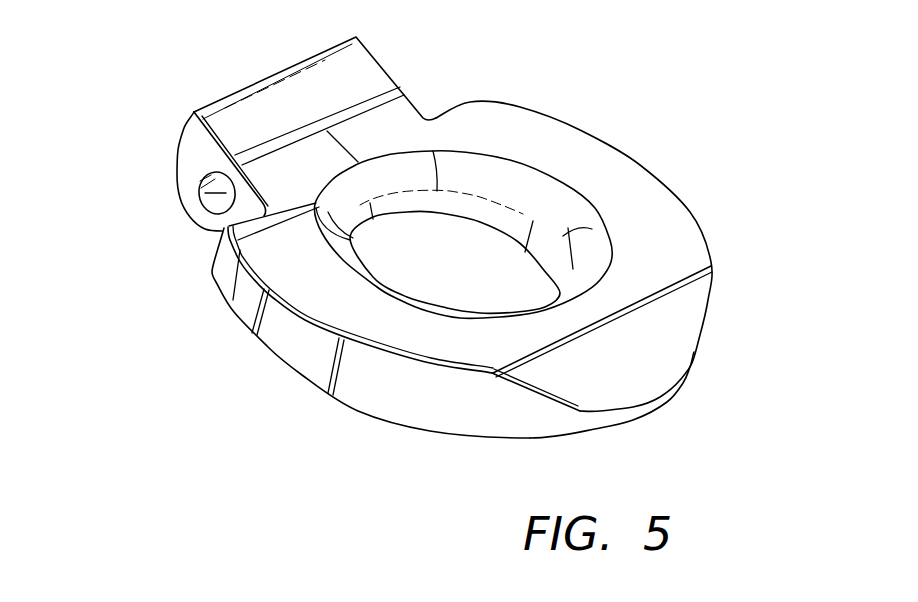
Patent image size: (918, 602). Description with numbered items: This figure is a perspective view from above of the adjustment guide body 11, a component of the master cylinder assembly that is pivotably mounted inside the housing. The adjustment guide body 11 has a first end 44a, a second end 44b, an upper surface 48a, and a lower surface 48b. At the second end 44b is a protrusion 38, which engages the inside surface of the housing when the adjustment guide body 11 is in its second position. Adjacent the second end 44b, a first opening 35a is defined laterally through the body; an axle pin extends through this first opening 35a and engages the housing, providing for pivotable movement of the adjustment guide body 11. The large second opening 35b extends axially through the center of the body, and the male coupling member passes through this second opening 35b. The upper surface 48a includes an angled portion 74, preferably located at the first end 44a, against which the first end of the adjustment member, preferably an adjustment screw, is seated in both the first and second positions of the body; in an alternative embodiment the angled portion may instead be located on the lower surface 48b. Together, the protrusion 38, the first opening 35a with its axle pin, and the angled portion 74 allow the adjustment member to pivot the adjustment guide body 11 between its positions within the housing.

The adjustment guide body 11 is at (708, 128).
The protrusion 38 is at (277, 82).
The second end 44b is at (188, 142).
The first opening 35a is at (225, 197).
The second opening 35b is at (471, 278).
The upper surface 48a is at (577, 143).
The angled portion 74 is at (688, 314).
The first end 44a is at (677, 378).
The lower surface 48b is at (373, 415).